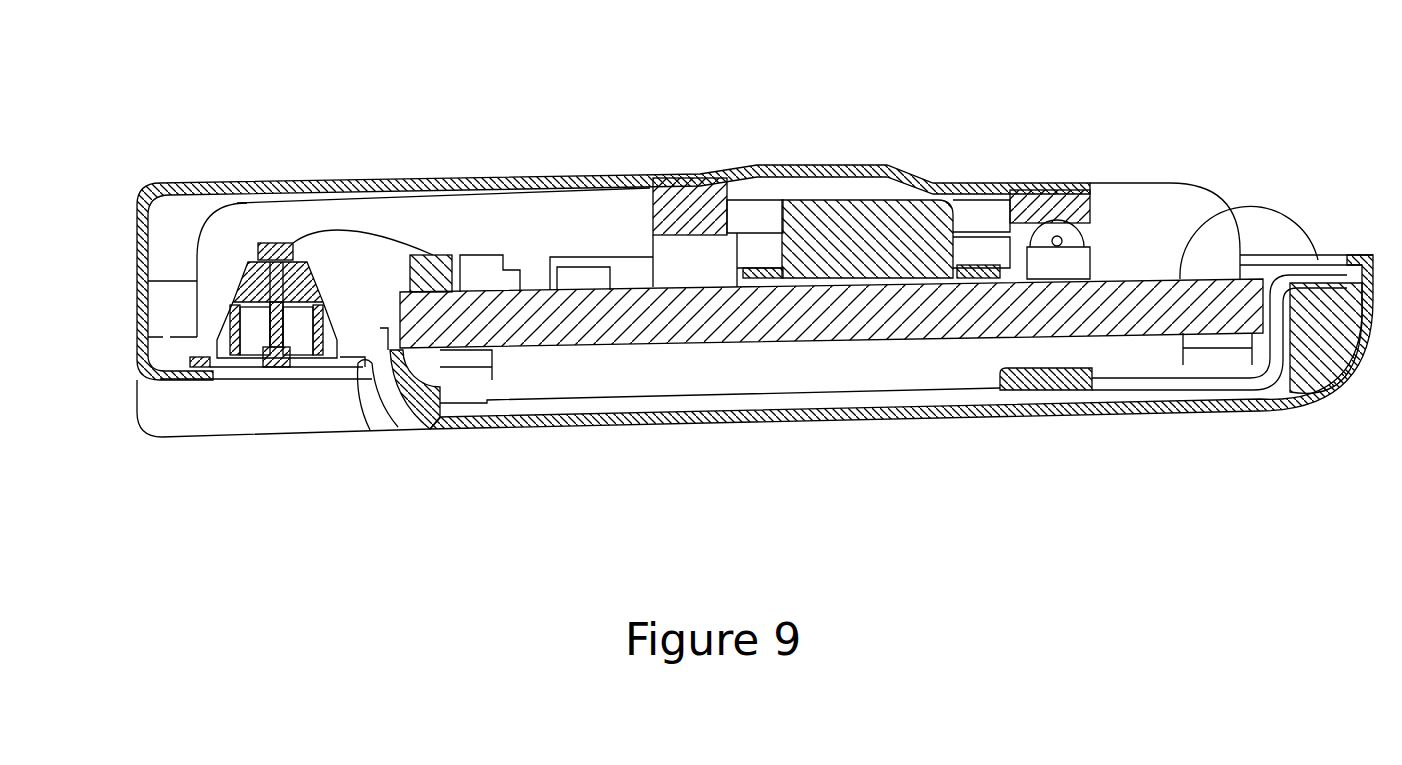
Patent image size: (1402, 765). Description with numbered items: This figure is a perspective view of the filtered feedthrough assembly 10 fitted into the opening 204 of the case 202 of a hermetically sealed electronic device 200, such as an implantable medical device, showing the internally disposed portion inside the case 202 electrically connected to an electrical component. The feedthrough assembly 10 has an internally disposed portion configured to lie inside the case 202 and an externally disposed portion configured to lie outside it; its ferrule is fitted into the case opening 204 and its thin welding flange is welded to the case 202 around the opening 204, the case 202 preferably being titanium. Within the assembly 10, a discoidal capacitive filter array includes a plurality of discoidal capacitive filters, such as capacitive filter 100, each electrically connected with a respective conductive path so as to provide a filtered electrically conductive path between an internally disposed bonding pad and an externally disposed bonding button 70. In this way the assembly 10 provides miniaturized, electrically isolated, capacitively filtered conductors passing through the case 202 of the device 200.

The filtered feedthrough assembly 10 is at (223, 389).
The bonding button 70 is at (278, 362).
The capacitive filter 100 is at (263, 240).
The hermetically sealed electronic device 200 is at (683, 167).
The case 202 is at (520, 427).
The case opening 204 is at (362, 370).